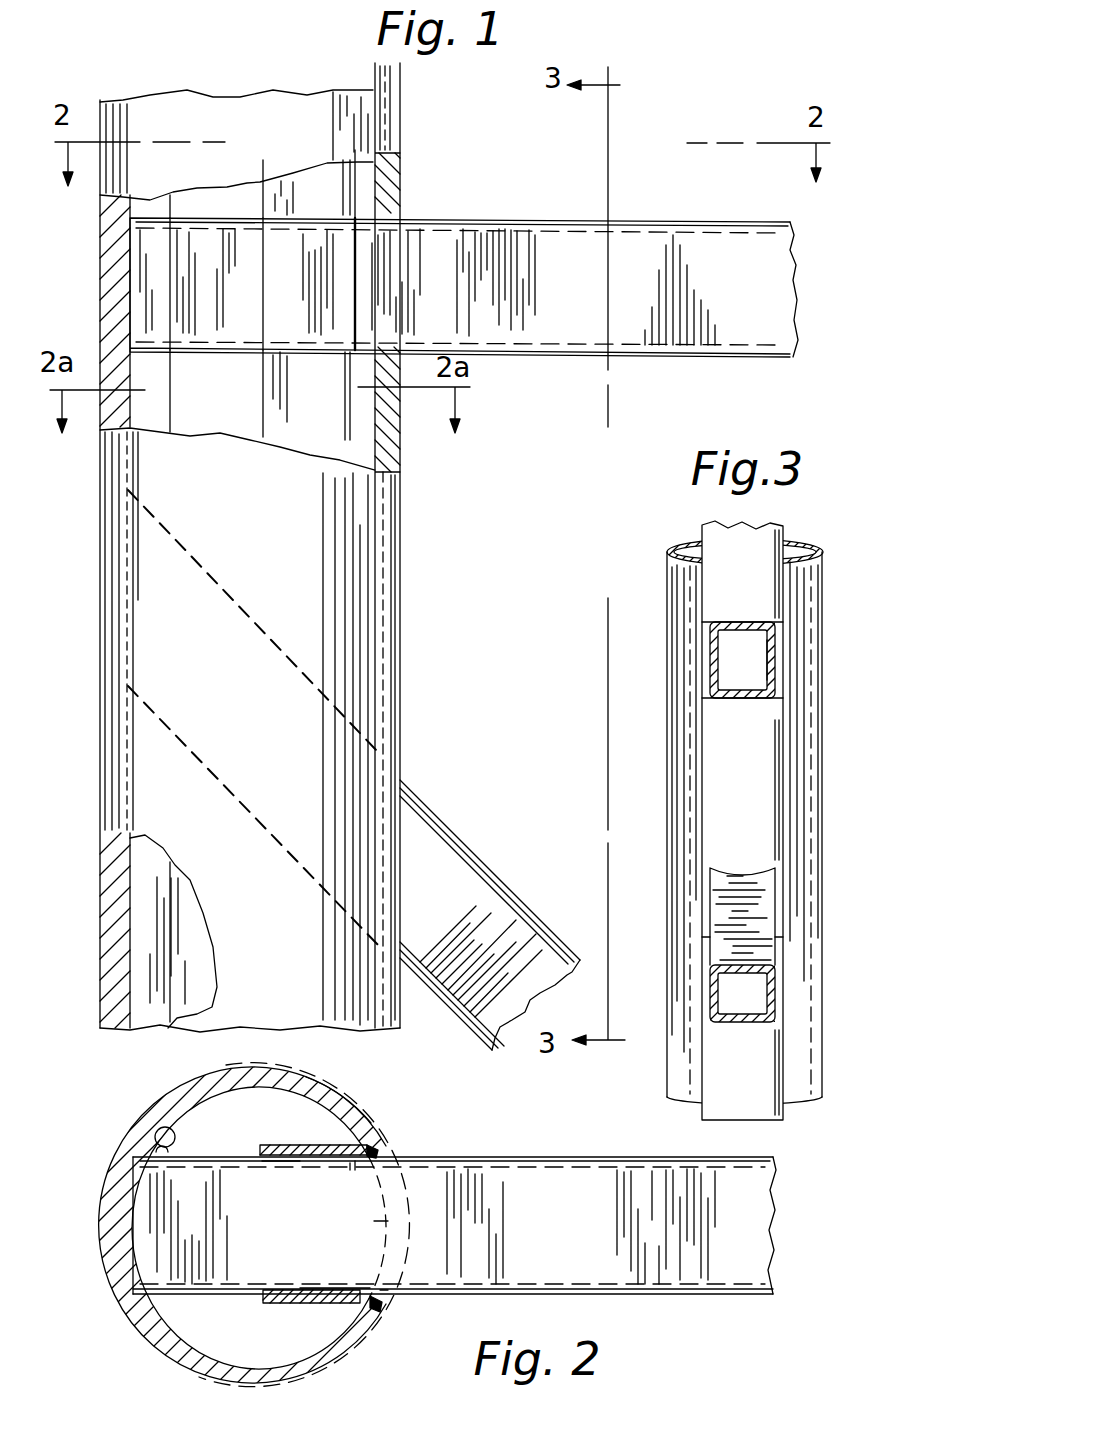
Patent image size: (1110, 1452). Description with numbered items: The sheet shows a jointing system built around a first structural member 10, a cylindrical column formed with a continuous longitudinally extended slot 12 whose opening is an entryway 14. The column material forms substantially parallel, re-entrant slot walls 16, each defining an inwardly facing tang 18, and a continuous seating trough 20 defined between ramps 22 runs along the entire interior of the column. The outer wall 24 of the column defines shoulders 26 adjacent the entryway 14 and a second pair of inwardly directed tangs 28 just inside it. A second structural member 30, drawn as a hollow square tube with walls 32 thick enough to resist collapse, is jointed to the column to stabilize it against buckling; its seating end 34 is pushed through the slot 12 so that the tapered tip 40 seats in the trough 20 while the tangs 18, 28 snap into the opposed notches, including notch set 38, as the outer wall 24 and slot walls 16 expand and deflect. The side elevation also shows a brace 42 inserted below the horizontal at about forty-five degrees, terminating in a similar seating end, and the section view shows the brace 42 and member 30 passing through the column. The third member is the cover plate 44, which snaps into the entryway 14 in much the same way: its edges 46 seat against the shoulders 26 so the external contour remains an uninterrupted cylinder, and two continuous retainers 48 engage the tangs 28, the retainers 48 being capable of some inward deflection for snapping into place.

In FIG. 1, the first structural member 10 is at (418, 613).
In FIG. 2, the first structural member 10 is at (152, 1094).
In FIG. 3, the first structural member 10 is at (830, 566).
In FIG. 1, the slot 12 is at (393, 173).
In FIG. 2, the slot 12 is at (382, 1221).
In FIG. 2, the entryway 14 is at (367, 1252).
In FIG. 2, the slot walls 16 is at (287, 1148).
In FIG. 2, the tang 18 is at (273, 1163).
In FIG. 1, the seating trough 20 is at (157, 383).
In FIG. 2, the seating trough 20 is at (155, 1217).
In FIG. 1, the ramps 22 is at (172, 943).
In FIG. 2, the ramps 22 is at (155, 1130).
In FIG. 2, the outer wall 24 is at (337, 1127).
In FIG. 2, the shoulders 26 is at (377, 1156).
In FIG. 2, the second pair of inwardly directed tangs 28 is at (370, 1170).
In FIG. 1, the second structural member 30 is at (700, 222).
In FIG. 2, the second structural member 30 is at (573, 1158).
In FIG. 3, the second structural member 30 is at (777, 638).
In FIG. 1, the walls 32 is at (763, 243).
In FIG. 3, the walls 32 is at (777, 675).
In FIG. 2, the seating end 34 is at (218, 1263).
In FIG. 2, the notch set 38 is at (360, 1284).
In FIG. 2, the tapered tip 40 is at (160, 1148).
In FIG. 1, the brace 42 is at (485, 866).
In FIG. 3, the brace 42 is at (772, 988).
In FIG. 1, the cover plate 44 is at (393, 187).
In FIG. 3, the cover plate 44 is at (773, 758).
In FIG. 2, the edges 46 is at (377, 1330).
In FIG. 1, the retainers 48 is at (347, 402).
In FIG. 2, the retainers 48 is at (357, 1170).